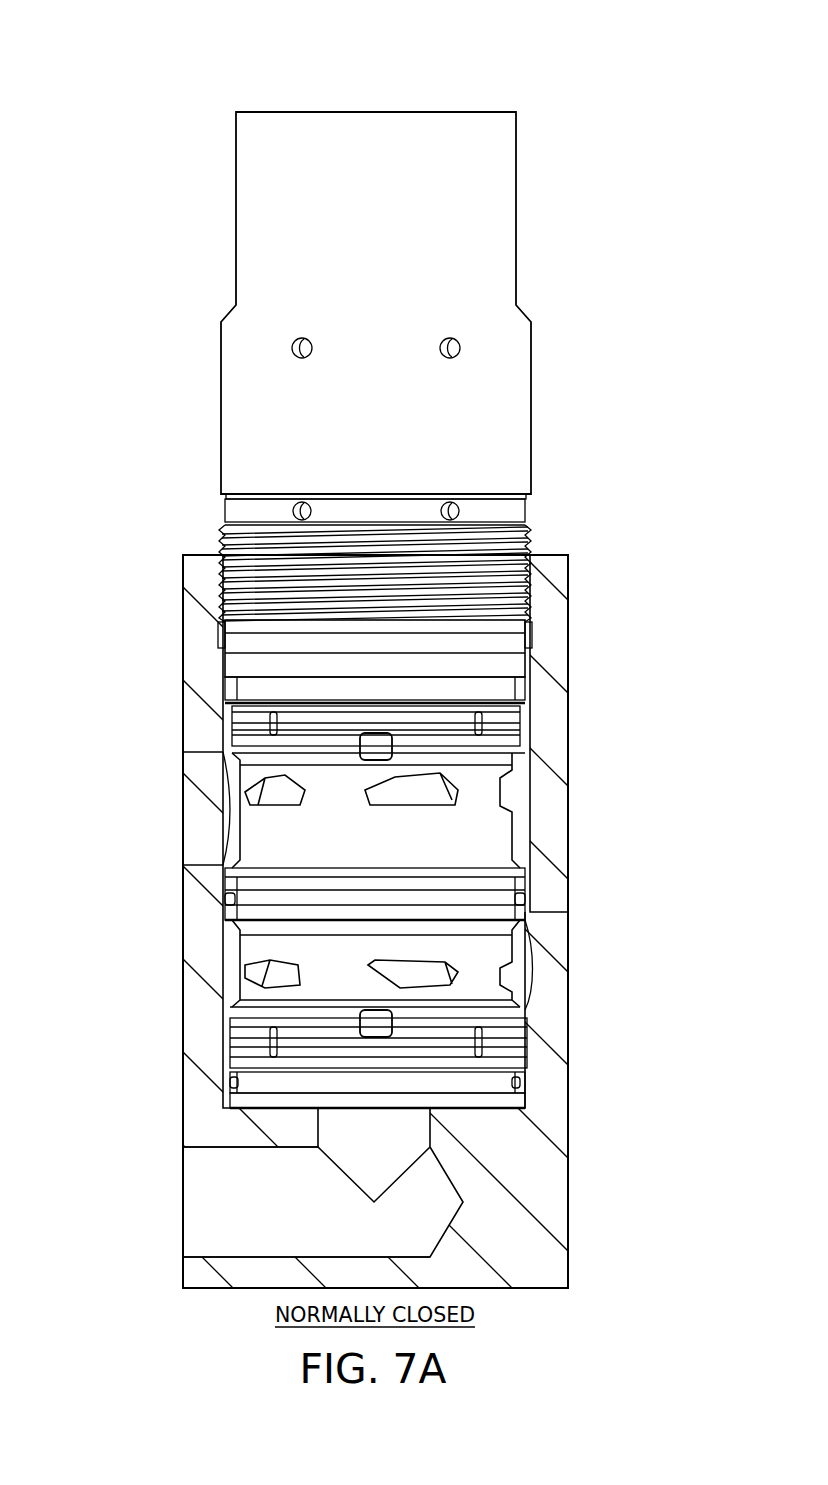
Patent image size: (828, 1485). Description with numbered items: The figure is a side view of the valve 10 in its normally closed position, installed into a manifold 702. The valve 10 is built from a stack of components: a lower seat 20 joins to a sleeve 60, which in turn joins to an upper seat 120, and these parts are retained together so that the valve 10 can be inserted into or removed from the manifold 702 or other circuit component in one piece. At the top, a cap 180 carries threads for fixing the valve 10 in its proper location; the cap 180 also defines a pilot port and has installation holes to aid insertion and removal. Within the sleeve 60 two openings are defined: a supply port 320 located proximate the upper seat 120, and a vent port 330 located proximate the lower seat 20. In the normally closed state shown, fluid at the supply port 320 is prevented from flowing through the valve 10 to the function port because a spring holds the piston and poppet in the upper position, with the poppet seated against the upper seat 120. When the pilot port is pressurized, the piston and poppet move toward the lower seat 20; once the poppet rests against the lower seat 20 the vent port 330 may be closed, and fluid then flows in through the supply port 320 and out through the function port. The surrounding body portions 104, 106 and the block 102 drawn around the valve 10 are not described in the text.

The valve 10 is at (170, 78).
The cap 180 is at (513, 262).
The upper seat 120 is at (238, 648).
The manifold 702 is at (568, 748).
The housing body portion 104 is at (193, 784).
The vent port 330 is at (432, 778).
The sleeve 60 is at (493, 828).
The supply port 320 is at (270, 973).
The lower housing portion 106 is at (558, 983).
The lower seat 20 is at (500, 1083).
The valve seat block 102 is at (193, 1205).